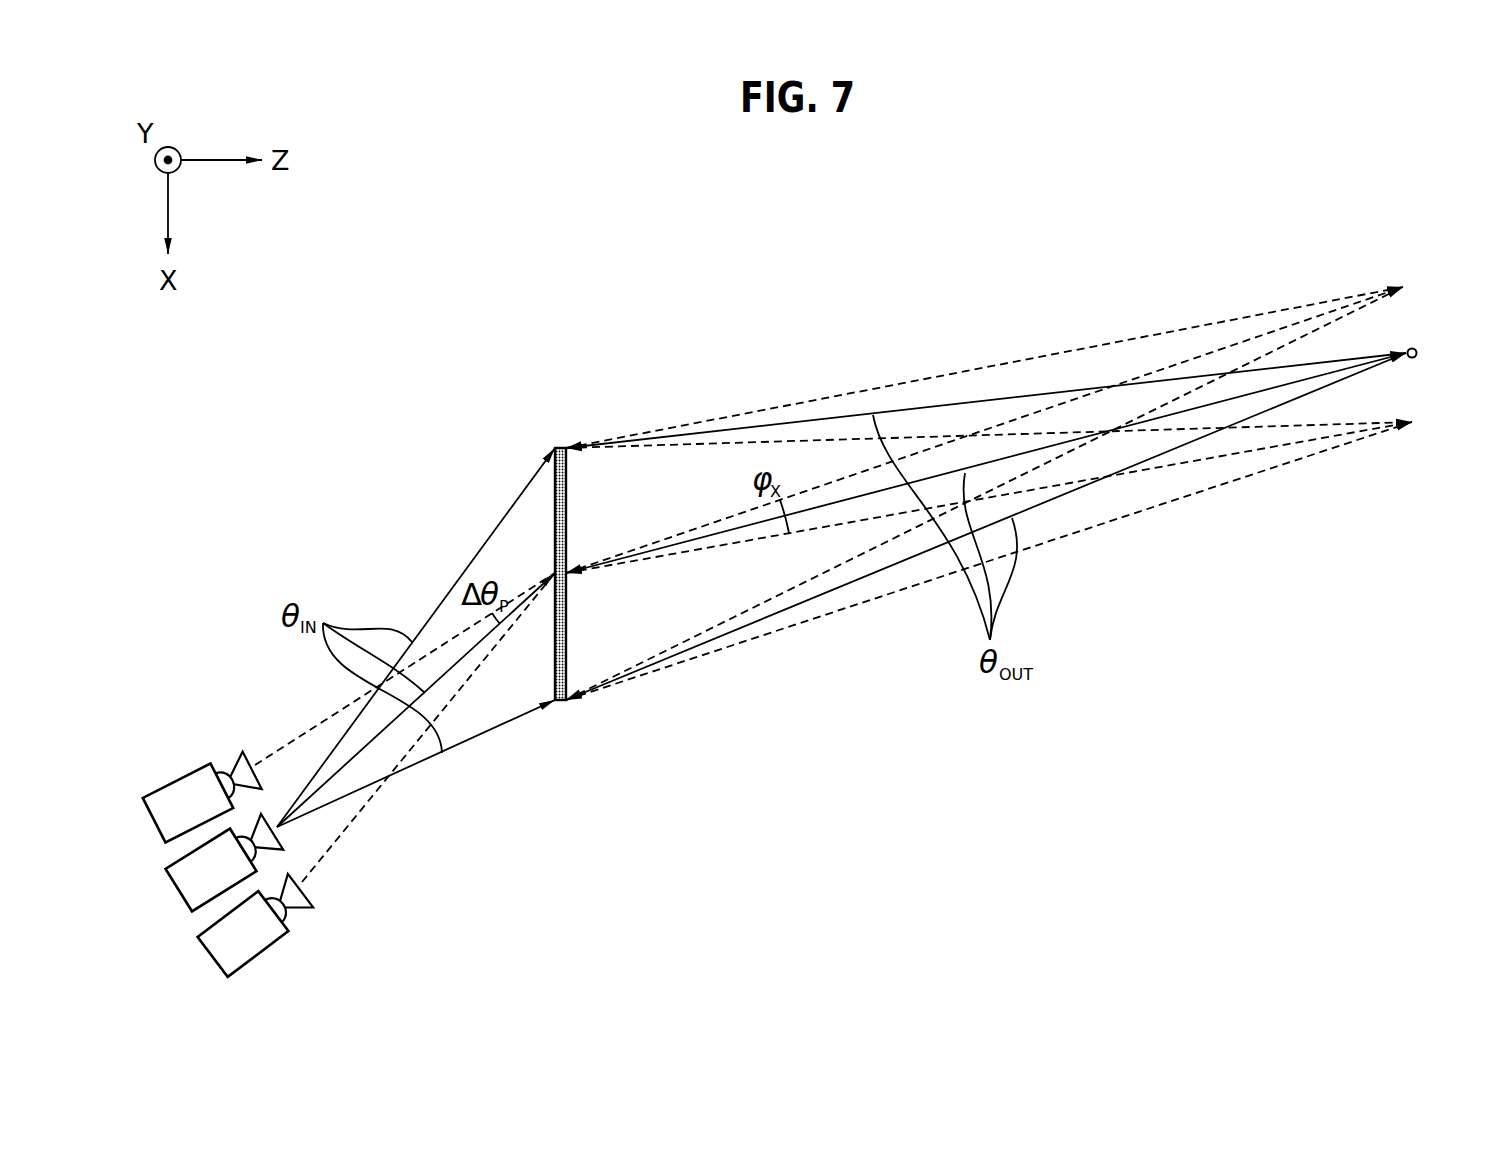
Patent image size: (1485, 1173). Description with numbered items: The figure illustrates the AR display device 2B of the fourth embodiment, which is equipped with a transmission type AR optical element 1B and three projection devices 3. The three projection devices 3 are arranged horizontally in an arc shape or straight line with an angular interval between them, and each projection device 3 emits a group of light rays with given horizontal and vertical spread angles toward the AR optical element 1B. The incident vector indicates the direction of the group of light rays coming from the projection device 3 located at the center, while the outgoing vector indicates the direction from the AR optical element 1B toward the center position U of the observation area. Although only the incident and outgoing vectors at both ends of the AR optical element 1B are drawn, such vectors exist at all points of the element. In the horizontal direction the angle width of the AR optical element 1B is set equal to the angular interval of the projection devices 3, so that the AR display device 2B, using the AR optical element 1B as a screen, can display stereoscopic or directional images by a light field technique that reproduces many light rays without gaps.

The projection device 3 is at (152, 822).
The AR optical element 1B is at (555, 627).
The AR display device 2B is at (557, 398).
The center position of the observation area U is at (1418, 353).